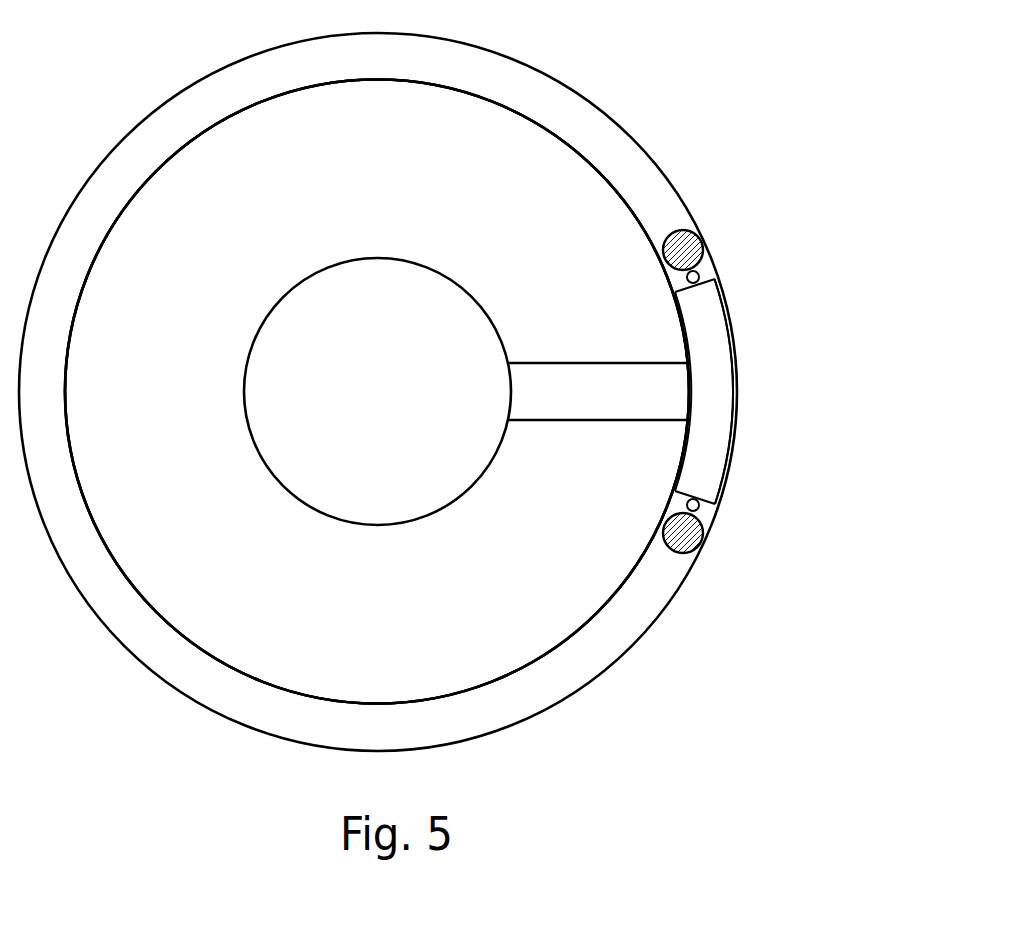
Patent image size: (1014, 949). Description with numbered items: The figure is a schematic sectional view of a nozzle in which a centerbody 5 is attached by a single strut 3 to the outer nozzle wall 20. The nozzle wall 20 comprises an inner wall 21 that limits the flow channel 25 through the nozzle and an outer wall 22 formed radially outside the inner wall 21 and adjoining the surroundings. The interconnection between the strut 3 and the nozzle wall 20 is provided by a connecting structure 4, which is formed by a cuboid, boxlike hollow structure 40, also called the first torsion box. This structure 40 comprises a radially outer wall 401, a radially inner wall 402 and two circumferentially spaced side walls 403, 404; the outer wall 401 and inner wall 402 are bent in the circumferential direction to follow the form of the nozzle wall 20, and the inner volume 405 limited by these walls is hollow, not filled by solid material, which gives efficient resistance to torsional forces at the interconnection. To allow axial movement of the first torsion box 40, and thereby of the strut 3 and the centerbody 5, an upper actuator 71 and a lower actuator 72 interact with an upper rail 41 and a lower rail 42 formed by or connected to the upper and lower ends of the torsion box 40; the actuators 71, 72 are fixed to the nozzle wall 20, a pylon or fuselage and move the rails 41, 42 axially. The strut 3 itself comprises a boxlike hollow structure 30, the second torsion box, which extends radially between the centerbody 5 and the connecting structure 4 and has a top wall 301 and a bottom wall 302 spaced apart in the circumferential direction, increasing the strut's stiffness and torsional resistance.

The strut 3 is at (593, 394).
The connecting structure 4 is at (710, 395).
The centerbody 5 is at (427, 513).
The outer nozzle wall 20 is at (312, 74).
The inner wall 21 is at (170, 158).
The outer wall 22 is at (607, 110).
The flow channel 25 is at (458, 206).
The boxlike hollow structure 30 is at (593, 394).
The boxlike hollow structure 40 is at (710, 395).
The upper rail 41 is at (703, 282).
The lower rail 42 is at (702, 508).
The upper actuator 71 is at (703, 233).
The lower actuator 72 is at (702, 543).
The top wall 301 is at (552, 362).
The bottom wall 302 is at (612, 422).
The radially outer wall 401 is at (733, 318).
The radially inner wall 402 is at (678, 318).
The side wall 403 is at (678, 300).
The side wall 404 is at (707, 495).
The inner volume 405 is at (722, 390).